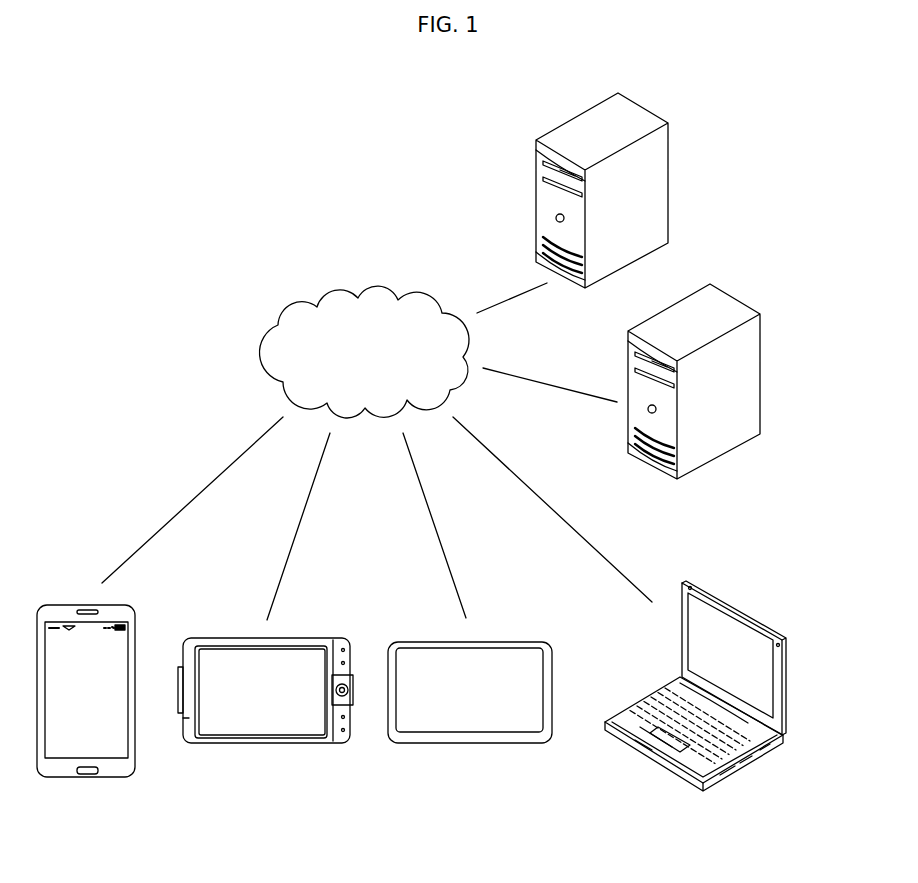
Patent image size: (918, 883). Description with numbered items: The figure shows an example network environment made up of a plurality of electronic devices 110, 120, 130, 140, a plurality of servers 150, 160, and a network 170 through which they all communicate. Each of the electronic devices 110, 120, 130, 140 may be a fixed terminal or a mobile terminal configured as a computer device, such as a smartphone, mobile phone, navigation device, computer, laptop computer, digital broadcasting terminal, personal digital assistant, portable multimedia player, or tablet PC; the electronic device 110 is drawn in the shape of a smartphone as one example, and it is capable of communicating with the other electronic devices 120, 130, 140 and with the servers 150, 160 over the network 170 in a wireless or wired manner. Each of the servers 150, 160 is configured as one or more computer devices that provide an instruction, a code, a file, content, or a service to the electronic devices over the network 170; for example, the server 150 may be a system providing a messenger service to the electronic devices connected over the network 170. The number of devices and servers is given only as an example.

The electronic device 110 is at (88, 778).
The electronic device 120 is at (265, 745).
The electronic device 130 is at (470, 745).
The electronic device 140 is at (785, 688).
The server 150 is at (760, 372).
The server 160 is at (668, 180).
The network 170 is at (373, 285).